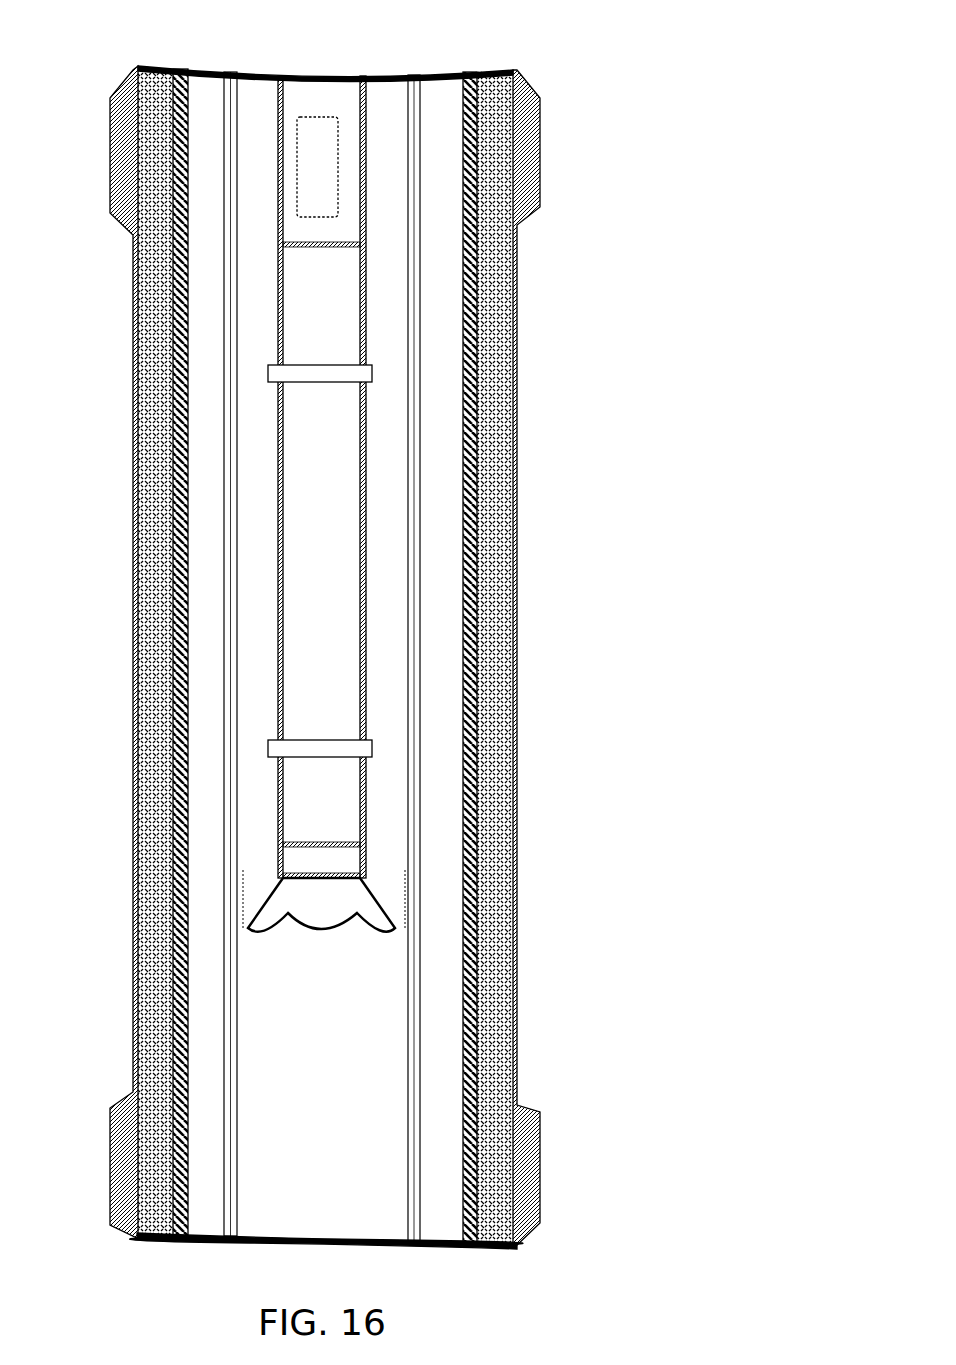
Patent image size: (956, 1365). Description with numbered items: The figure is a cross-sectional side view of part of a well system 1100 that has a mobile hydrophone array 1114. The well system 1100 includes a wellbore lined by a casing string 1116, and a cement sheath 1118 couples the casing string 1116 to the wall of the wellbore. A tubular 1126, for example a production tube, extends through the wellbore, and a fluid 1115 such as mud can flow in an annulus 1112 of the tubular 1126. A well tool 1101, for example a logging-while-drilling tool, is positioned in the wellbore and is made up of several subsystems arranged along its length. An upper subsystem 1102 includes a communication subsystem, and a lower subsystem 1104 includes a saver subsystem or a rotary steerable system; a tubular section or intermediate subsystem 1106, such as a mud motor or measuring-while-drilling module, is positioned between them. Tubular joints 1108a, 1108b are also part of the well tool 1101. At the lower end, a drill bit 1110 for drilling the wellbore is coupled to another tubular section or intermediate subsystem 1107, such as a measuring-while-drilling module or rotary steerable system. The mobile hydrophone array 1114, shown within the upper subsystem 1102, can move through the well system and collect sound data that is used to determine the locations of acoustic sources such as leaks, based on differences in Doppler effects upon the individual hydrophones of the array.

The well system 1100 is at (370, 628).
The well tool 1101 is at (322, 491).
The subsystem 1102 is at (332, 263).
The subsystem 1104 is at (349, 819).
The intermediate subsystem 1106 is at (300, 478).
The intermediate subsystem 1107 is at (349, 866).
The tubular joint 1108a is at (258, 373).
The tubular joint 1108b is at (258, 748).
The drill bit 1110 is at (343, 927).
The annulus 1112 is at (255, 104).
The mobile hydrophone array 1114 is at (354, 157).
The fluid 1115 is at (391, 1067).
The casing string 1116 is at (486, 554).
The cement sheath 1118 is at (510, 487).
The tubular 1126 is at (211, 650).